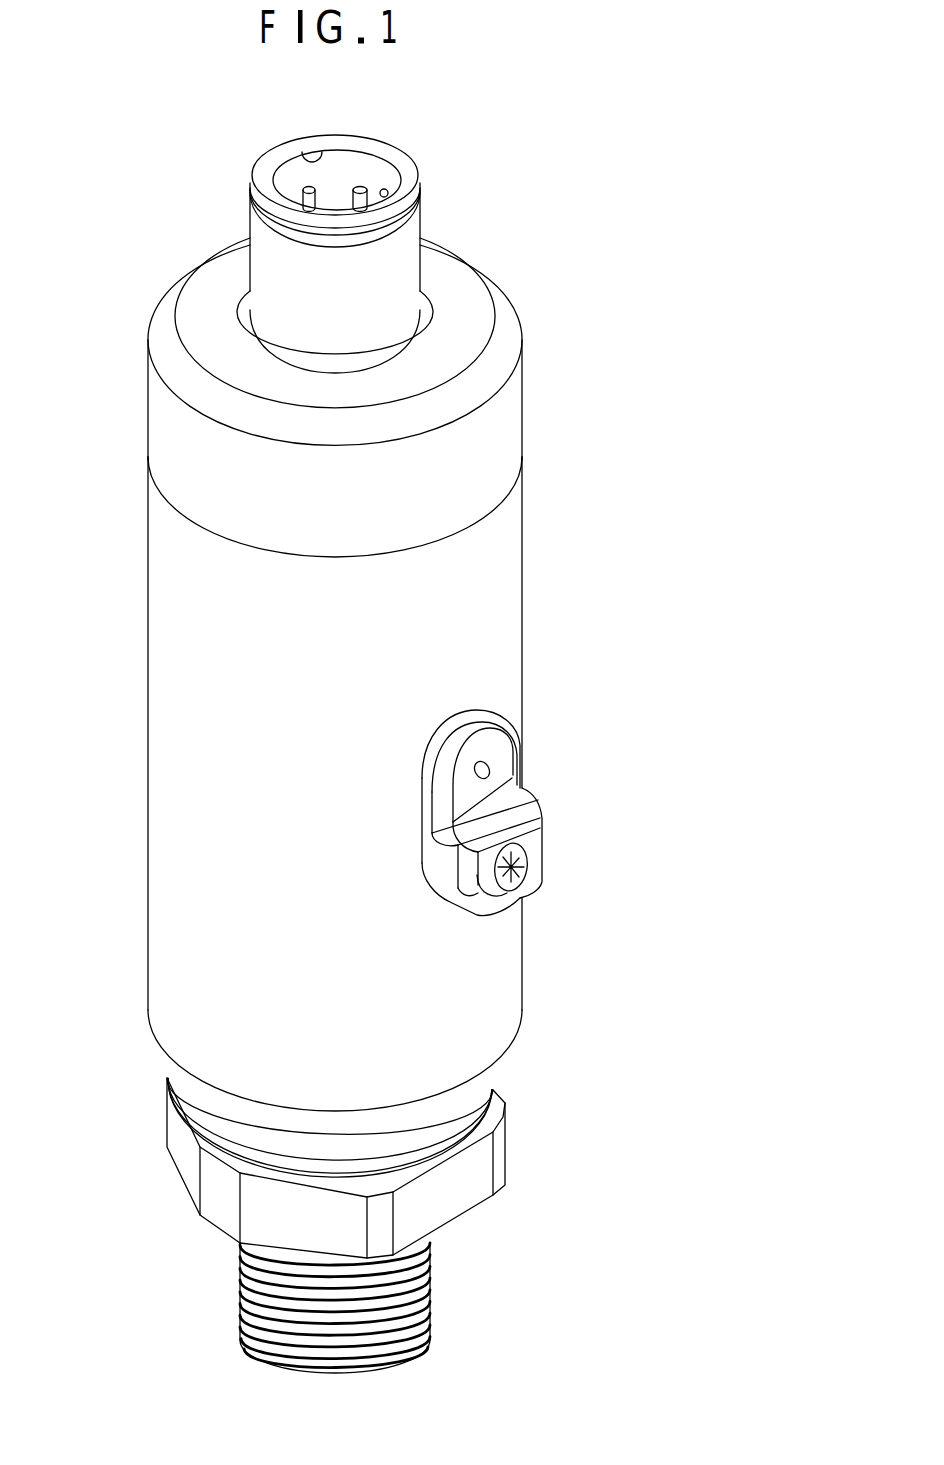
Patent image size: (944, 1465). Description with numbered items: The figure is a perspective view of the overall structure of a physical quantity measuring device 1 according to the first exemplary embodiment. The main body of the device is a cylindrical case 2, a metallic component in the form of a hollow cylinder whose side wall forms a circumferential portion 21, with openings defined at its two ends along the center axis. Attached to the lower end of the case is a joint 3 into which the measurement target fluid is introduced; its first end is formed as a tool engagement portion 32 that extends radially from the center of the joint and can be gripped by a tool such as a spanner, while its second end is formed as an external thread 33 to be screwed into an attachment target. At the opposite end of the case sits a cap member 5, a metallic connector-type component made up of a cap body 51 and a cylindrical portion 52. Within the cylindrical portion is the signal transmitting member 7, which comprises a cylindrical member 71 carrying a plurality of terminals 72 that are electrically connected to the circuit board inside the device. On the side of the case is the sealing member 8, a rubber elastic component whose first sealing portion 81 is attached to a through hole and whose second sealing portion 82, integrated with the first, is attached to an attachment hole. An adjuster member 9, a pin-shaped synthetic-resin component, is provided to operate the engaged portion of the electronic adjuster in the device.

The physical quantity measuring device 1 is at (678, 190).
The cylindrical case 2 is at (604, 605).
The circumferential portion 21 is at (167, 579).
The joint 3 is at (567, 1132).
The tool engagement portion 32 is at (165, 1112).
The external thread 33 is at (242, 1297).
The cap member 5 is at (600, 318).
The cap body 51 is at (523, 400).
The cylindrical portion 52 is at (415, 219).
The signal transmitting member 7 is at (360, 127).
The cylindrical member 71 is at (322, 152).
The terminals 72 is at (362, 190).
The sealing member 8 is at (661, 789).
The first sealing portion 81 is at (545, 823).
The second sealing portion 82 is at (505, 757).
The adjuster member 9 is at (540, 865).